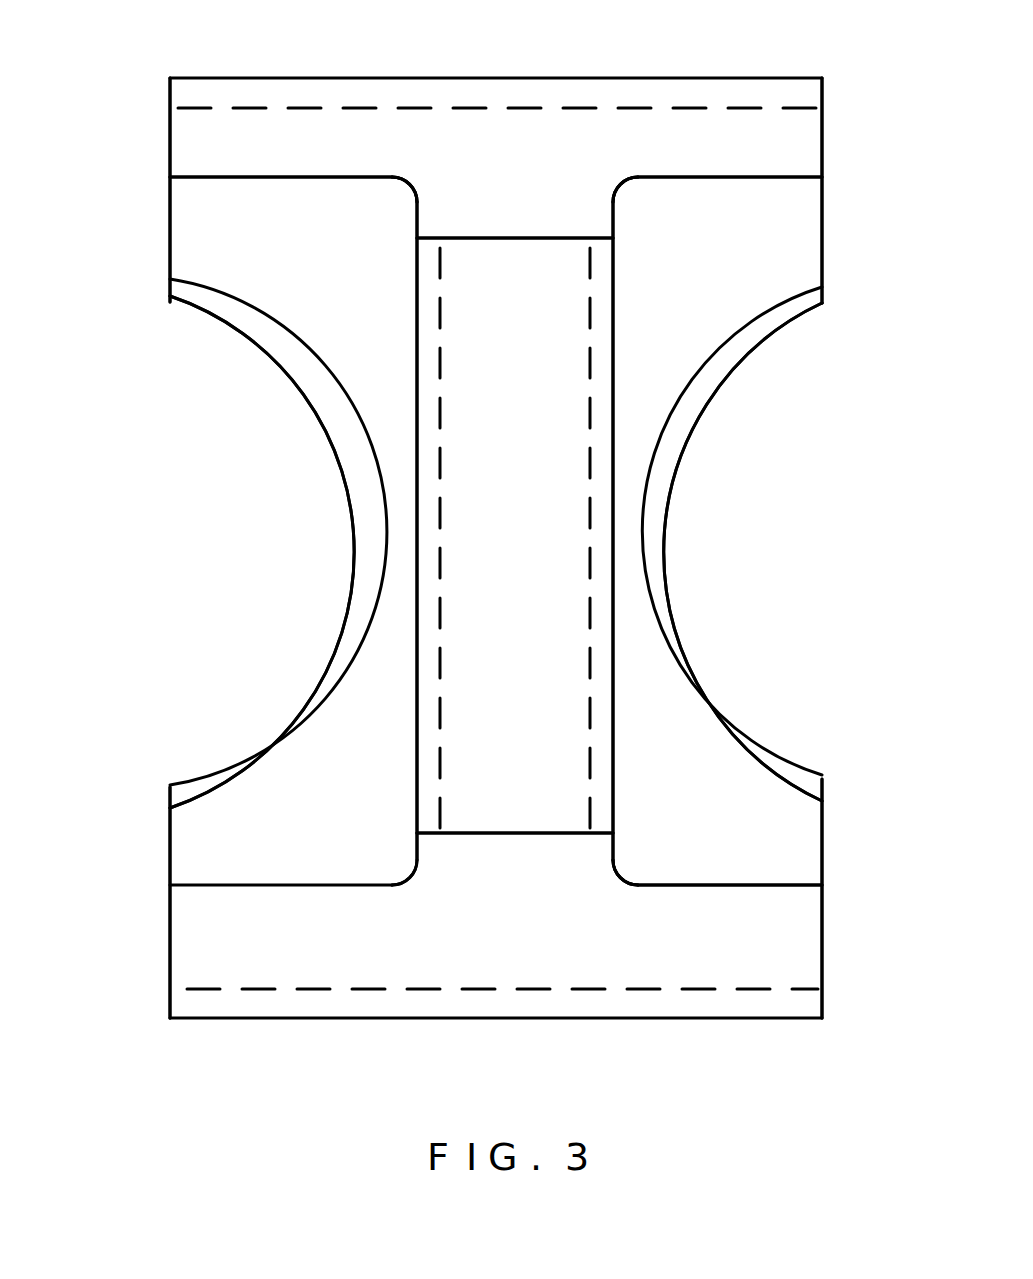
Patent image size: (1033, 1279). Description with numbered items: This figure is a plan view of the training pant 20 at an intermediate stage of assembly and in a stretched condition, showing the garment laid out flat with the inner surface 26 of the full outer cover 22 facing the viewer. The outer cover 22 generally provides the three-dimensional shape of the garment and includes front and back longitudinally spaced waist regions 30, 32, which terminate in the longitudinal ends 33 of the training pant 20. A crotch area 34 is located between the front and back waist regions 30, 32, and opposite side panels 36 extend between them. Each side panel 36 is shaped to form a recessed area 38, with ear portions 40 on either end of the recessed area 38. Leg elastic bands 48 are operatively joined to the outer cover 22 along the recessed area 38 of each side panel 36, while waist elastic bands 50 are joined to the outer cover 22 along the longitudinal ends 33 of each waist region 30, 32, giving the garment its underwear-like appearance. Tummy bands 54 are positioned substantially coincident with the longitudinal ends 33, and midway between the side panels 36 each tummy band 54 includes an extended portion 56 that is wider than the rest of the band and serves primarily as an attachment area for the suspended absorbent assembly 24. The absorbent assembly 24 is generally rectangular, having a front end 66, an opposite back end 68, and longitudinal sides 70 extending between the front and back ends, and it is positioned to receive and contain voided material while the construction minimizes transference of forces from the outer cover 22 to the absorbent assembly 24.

The training pant 20 is at (134, 138).
The outer cover 22 is at (195, 218).
The absorbent assembly 24 is at (420, 410).
The inner surface 26 is at (385, 322).
The front waist region 30 is at (830, 192).
The back waist region 32 is at (830, 856).
The longitudinal ends 33 is at (760, 78).
The crotch area 34 is at (770, 423).
The side panels 36 is at (823, 268).
The recessed area 38 is at (347, 638).
The ear portions 40 is at (300, 242).
The leg elastic bands 48 is at (240, 314).
The waist elastic bands 50 is at (612, 90).
The tummy bands 54 is at (343, 125).
The extended portion 56 is at (615, 217).
The front end 66 is at (528, 262).
The back end 68 is at (555, 790).
The longitudinal sides 70 is at (418, 655).